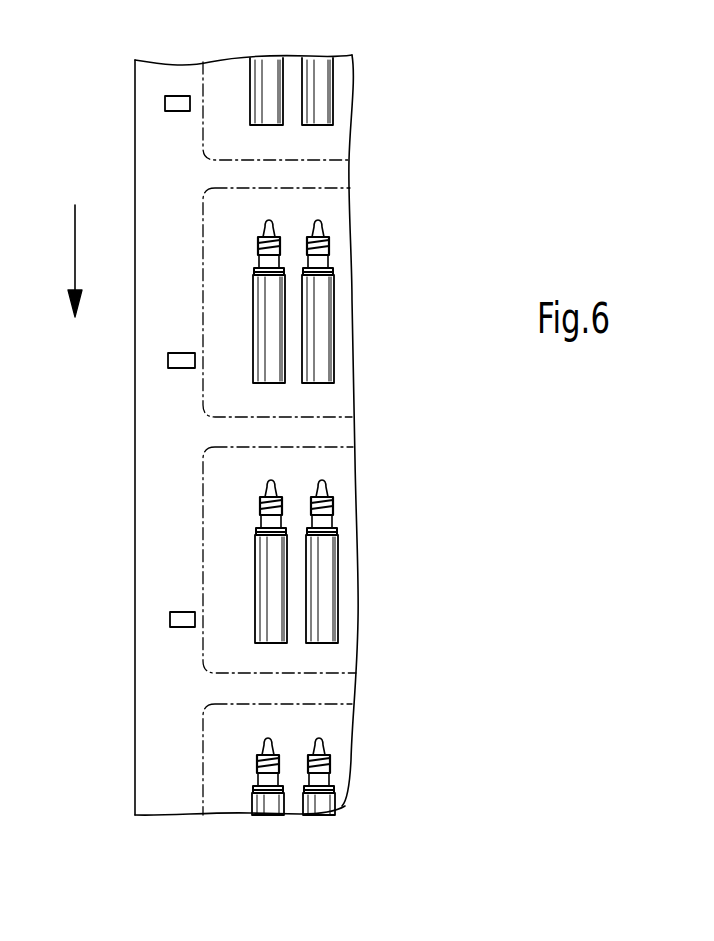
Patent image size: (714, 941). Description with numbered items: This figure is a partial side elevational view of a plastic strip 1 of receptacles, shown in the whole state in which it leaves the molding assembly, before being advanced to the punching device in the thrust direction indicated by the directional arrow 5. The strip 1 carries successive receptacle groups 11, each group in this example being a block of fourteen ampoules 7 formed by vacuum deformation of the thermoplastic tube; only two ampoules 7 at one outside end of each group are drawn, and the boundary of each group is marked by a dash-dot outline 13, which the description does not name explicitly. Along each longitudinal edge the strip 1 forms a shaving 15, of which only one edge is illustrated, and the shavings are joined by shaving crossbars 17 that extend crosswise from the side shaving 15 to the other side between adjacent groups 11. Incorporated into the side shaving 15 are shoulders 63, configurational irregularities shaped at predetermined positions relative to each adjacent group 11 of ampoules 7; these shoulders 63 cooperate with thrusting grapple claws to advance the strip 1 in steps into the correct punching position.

The plastic strip 1 is at (358, 233).
The directional arrow 5 is at (75, 248).
The ampoules 7 is at (263, 83).
The receptacle group 11 is at (340, 87).
The separation line 13 is at (278, 160).
The shaving 15 is at (163, 457).
The shaving crossbars 17 is at (240, 175).
The shoulders 63 is at (165, 103).